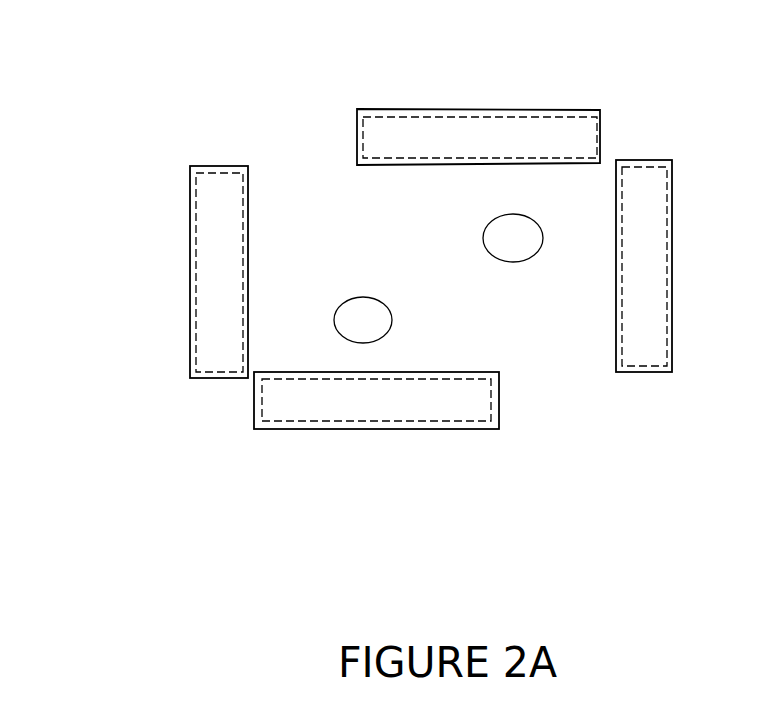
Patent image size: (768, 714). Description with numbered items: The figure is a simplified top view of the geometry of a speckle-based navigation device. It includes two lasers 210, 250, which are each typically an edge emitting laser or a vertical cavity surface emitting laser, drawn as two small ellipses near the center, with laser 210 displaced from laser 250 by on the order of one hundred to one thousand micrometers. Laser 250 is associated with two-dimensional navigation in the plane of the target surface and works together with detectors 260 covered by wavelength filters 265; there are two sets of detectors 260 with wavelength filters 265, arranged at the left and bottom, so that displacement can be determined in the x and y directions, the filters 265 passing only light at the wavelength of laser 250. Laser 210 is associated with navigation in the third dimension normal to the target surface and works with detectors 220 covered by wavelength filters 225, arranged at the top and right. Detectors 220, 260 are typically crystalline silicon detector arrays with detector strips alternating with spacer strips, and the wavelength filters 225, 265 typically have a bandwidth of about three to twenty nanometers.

The laser 210 is at (510, 250).
The detectors 220 is at (525, 137).
The wavelength filters 225 is at (378, 108).
The laser 250 is at (352, 313).
The detectors 260 is at (208, 240).
The wavelength filters 265 is at (226, 164).